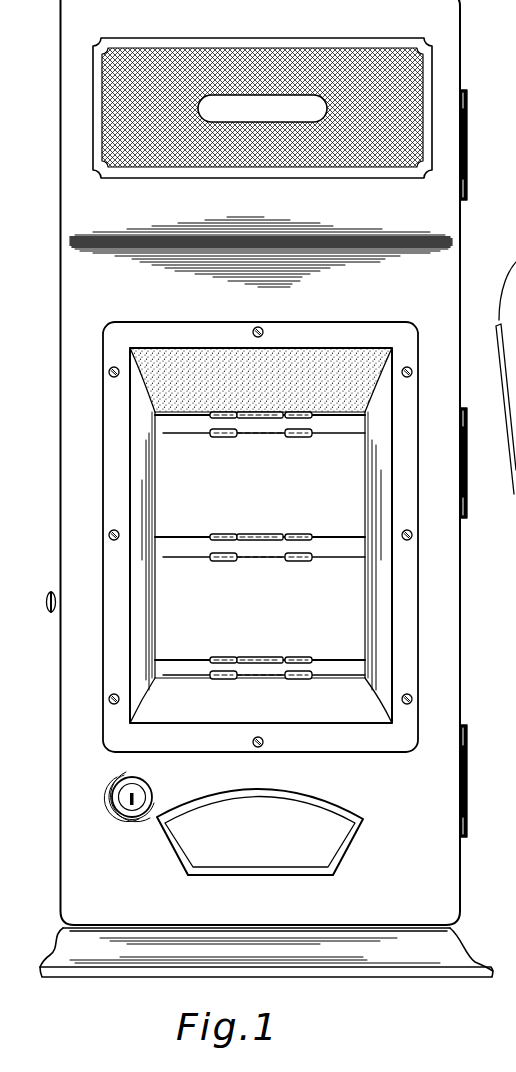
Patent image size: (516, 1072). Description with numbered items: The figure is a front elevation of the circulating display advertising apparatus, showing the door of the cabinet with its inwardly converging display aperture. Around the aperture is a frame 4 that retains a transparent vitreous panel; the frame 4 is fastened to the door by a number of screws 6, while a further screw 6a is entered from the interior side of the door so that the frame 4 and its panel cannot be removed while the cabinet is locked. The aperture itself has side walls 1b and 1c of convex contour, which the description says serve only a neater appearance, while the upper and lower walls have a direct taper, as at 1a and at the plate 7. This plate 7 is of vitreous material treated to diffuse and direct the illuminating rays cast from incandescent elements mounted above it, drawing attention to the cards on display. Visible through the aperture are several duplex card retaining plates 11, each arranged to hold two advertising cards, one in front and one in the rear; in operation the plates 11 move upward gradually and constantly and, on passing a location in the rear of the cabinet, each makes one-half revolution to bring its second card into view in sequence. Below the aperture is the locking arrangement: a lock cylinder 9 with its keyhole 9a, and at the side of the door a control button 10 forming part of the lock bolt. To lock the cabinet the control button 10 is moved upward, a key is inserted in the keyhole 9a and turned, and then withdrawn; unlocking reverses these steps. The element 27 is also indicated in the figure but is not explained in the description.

The upper wall of door aperture 1a is at (362, 720).
The side wall of door aperture 1b is at (138, 653).
The side wall of door aperture 1c is at (380, 645).
The frame 4 is at (408, 683).
The screw 6 is at (412, 536).
The screw entered from interior side 6a is at (261, 748).
The plate of vitreous material 7 is at (370, 362).
The lock cylinder 9 is at (125, 788).
The keyhole 9a is at (115, 818).
The control button 10 is at (55, 613).
The duplex card retaining plate 11 is at (164, 433).
The glass partition 27 is at (352, 428).